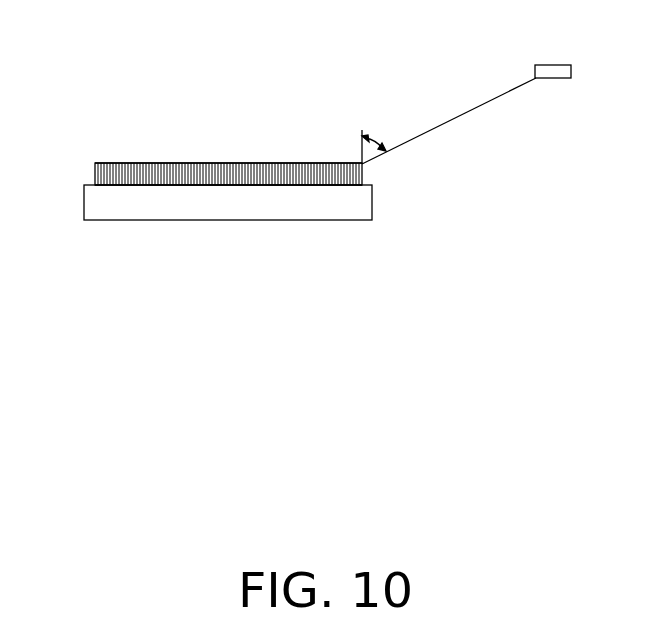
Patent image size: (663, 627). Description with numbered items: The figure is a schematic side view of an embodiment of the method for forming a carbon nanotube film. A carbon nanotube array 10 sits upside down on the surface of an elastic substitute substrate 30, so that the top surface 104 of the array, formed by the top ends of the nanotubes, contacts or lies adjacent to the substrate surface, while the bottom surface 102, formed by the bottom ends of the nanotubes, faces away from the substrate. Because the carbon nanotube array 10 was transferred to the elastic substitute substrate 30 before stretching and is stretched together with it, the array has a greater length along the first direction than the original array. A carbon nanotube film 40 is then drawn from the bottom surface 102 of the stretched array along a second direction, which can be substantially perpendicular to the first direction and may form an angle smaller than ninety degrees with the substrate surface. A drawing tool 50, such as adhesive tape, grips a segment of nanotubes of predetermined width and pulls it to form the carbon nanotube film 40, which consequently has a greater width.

The carbon nanotube array 10 is at (250, 163).
The bottom surface 102 is at (96, 164).
The top surface 104 is at (105, 188).
The elastic substitute substrate 30 is at (357, 210).
The carbon nanotube film 40 is at (450, 118).
The drawing tool 50 is at (562, 63).